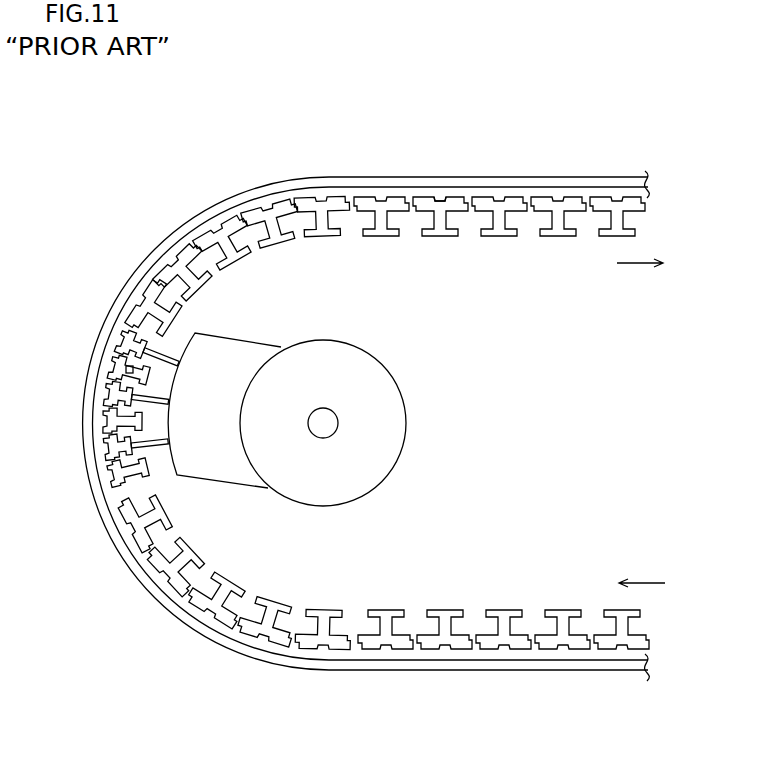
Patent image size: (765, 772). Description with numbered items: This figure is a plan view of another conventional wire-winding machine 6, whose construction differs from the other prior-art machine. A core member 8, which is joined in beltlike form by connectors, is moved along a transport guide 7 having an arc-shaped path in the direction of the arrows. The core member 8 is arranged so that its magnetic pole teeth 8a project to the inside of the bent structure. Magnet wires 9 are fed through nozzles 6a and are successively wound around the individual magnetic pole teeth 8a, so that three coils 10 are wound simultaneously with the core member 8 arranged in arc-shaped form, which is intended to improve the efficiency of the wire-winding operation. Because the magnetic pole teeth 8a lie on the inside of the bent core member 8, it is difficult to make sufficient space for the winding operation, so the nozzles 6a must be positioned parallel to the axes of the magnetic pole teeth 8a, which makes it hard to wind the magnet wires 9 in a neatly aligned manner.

The wire-winding machine 6 is at (388, 385).
The nozzles 6a is at (147, 317).
The transport guide 7 is at (528, 178).
The core member 8 is at (453, 198).
The magnetic pole teeth 8a is at (433, 223).
The magnet wires 9 is at (147, 355).
The coils 10 is at (126, 370).